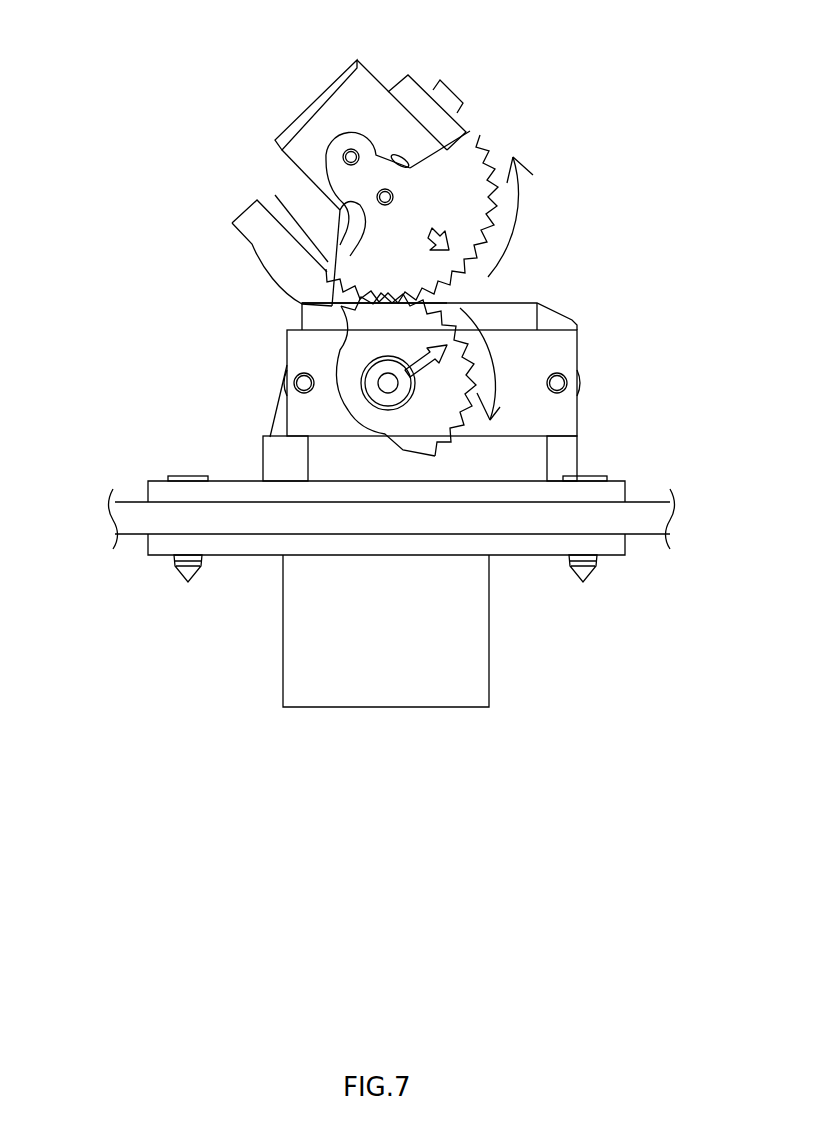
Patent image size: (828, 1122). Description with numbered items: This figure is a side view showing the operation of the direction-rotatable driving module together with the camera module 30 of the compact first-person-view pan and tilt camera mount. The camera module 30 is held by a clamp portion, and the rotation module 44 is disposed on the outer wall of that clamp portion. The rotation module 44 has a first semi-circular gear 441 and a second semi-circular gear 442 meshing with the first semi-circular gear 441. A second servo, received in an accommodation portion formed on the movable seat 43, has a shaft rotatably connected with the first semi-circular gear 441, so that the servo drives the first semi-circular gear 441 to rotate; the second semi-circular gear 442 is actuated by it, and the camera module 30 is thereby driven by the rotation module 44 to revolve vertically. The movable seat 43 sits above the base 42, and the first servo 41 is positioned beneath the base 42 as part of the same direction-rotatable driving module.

The camera module 30 is at (312, 106).
The second semi-circular gear 442 is at (370, 252).
The rotation module 44 is at (493, 290).
The movable seat 43 is at (565, 352).
The first semi-circular gear 441 is at (360, 332).
The base 42 is at (147, 500).
The first servo 41 is at (305, 637).